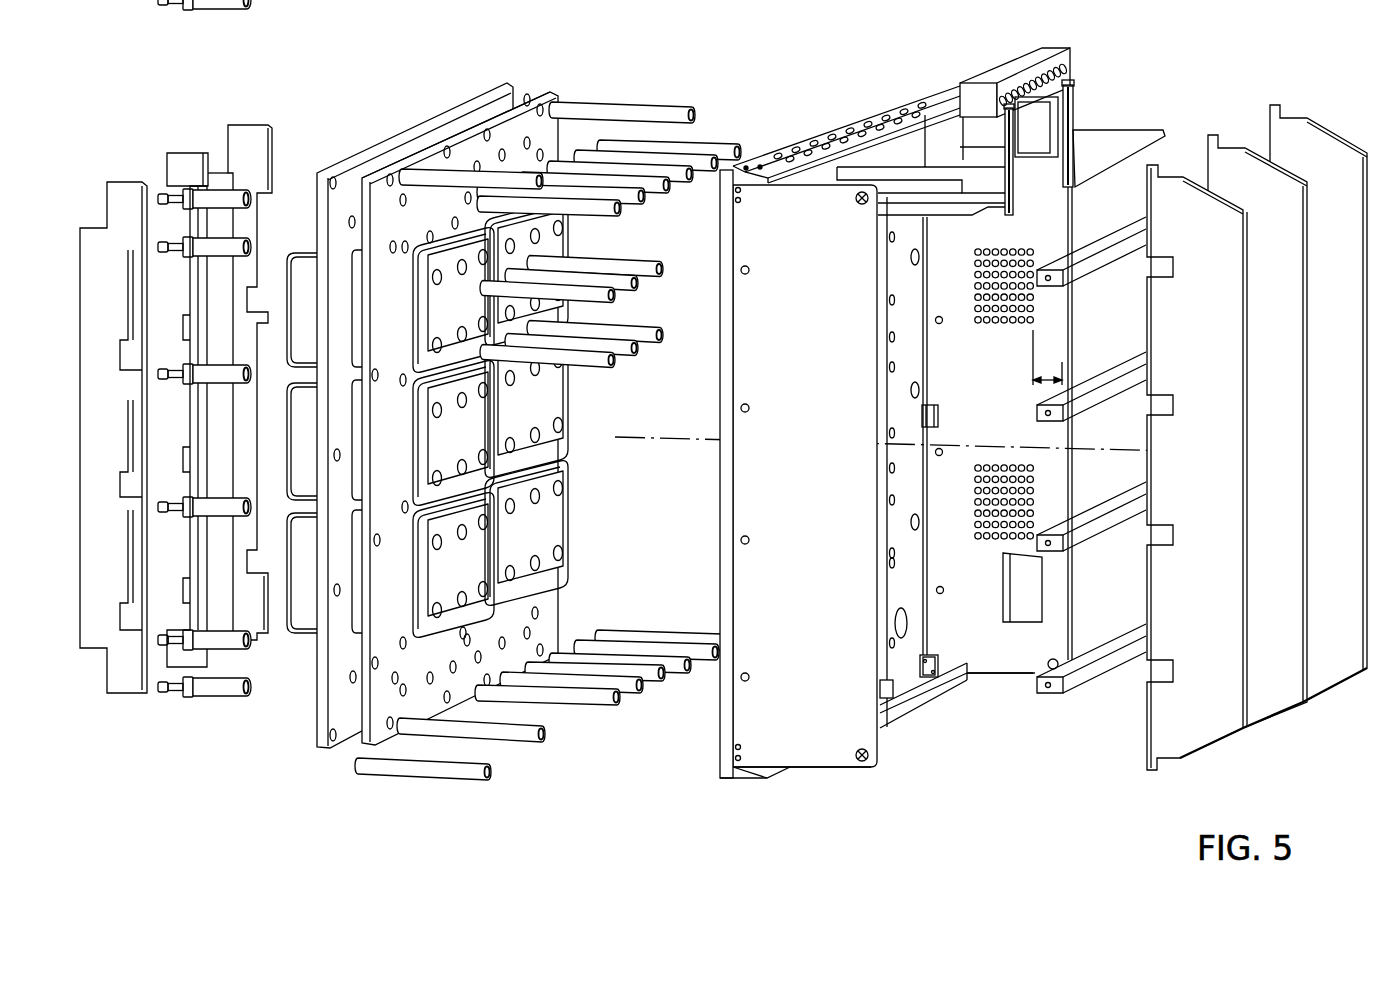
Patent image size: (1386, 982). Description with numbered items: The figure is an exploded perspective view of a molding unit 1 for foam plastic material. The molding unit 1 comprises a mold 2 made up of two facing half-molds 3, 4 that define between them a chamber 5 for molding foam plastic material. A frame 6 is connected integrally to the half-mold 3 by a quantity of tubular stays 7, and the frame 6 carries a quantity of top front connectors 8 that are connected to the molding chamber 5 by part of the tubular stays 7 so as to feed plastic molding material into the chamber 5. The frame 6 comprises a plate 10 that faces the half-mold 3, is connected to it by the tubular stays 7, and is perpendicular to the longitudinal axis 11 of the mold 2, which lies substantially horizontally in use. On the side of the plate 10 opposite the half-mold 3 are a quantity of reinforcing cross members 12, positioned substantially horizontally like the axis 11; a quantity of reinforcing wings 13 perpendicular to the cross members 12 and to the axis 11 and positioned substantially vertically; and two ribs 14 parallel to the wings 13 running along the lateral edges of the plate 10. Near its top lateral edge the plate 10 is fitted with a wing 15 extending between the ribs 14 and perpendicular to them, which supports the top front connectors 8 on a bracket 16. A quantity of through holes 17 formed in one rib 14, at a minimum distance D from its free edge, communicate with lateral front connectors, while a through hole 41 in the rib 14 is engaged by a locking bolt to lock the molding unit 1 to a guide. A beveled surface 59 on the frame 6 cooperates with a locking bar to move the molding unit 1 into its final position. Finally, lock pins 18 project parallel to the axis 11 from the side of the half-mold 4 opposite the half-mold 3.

The molding unit 1 is at (914, 436).
The mold 2 is at (452, 396).
The half-mold 3 is at (542, 137).
The half-mold 4 is at (488, 103).
The chamber 5 is at (522, 94).
The frame 6 is at (914, 438).
The tubular stays 7 is at (647, 335).
The top front connectors 8 is at (1023, 77).
The plate 10 is at (905, 675).
The longitudinal axis 11 is at (757, 440).
The reinforcing cross members 12 is at (1108, 257).
The reinforcing wings 13 is at (1170, 195).
The ribs 14 is at (812, 753).
The wing 15 is at (1112, 137).
The bracket 16 is at (1063, 110).
The through holes 17 is at (1020, 498).
The lock pins 18 is at (222, 507).
The through hole 41 is at (860, 205).
The beveled surface 59 is at (876, 124).
The minimum distance D is at (1060, 373).